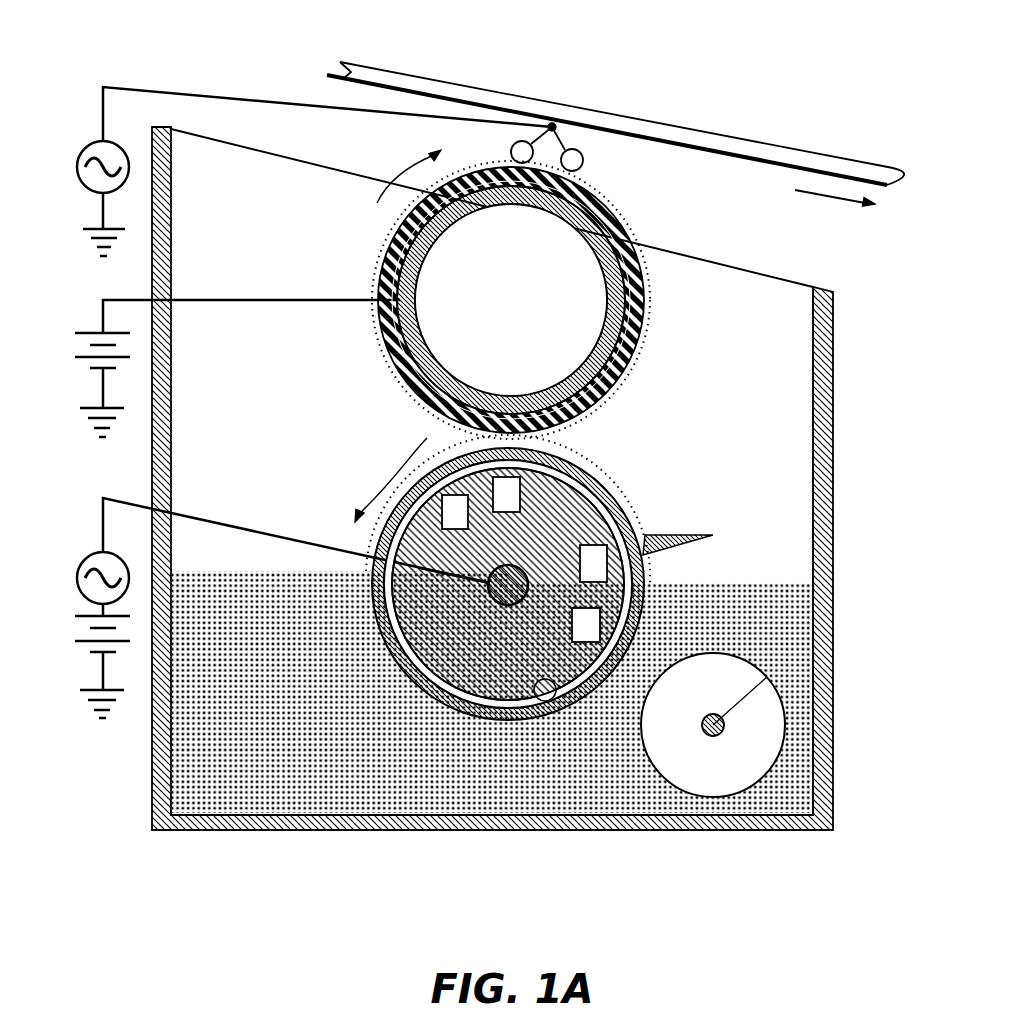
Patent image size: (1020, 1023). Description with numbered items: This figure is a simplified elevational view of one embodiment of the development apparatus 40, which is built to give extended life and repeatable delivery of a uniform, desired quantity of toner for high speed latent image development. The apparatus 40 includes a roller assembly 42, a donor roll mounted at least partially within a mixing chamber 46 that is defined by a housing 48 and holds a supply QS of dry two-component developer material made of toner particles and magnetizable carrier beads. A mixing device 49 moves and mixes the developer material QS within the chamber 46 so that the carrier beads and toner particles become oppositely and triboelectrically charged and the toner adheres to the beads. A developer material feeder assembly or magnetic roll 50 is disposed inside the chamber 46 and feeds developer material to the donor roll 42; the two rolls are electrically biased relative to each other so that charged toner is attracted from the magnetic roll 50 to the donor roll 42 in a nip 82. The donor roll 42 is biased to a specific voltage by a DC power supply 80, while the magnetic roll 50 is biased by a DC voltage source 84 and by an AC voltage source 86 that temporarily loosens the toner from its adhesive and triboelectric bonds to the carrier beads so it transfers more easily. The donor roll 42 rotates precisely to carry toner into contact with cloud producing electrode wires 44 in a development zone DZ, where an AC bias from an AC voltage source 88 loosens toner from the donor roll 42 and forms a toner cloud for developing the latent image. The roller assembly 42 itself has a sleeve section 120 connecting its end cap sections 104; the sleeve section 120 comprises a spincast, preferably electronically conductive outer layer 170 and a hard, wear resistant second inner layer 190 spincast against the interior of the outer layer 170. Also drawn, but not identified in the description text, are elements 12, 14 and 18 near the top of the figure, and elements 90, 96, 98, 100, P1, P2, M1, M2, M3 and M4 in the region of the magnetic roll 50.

The image on substrate 12 is at (783, 157).
The substrate / belt 14 is at (336, 72).
The direction of substrate travel 18 is at (828, 198).
The development apparatus 40 is at (530, 522).
The roller assembly 42 is at (501, 294).
The cloud producing electrode wires 44 is at (572, 149).
The mixing chamber 46 is at (286, 390).
The housing 48 is at (822, 386).
The mixing device 49 is at (656, 737).
The magnetic roll 50 is at (336, 468).
The DC power supply 80 is at (92, 333).
The nip 82 is at (575, 437).
The DC voltage source 84 is at (90, 645).
The AC voltage source 86 is at (80, 572).
The AC voltage source 88 is at (88, 147).
The magnet member 90 is at (560, 700).
The roller sleeve 96 is at (428, 704).
The direction of rotation 98 is at (390, 468).
The magnetic developer roller 100 is at (537, 665).
The end cap section 104 is at (580, 303).
The sleeve section 120 is at (375, 270).
The outer layer 170 is at (380, 330).
The second inner layer 190 is at (425, 346).
The supply of dry developer material QS is at (296, 762).
The position 1 P1 is at (652, 600).
The position 2 P2 is at (362, 600).
The development zone DZ is at (598, 161).
The magnet 1 M1 is at (572, 630).
The magnet 2 M2 is at (582, 565).
The magnet 3 M3 is at (508, 512).
The magnet 4 M4 is at (455, 529).